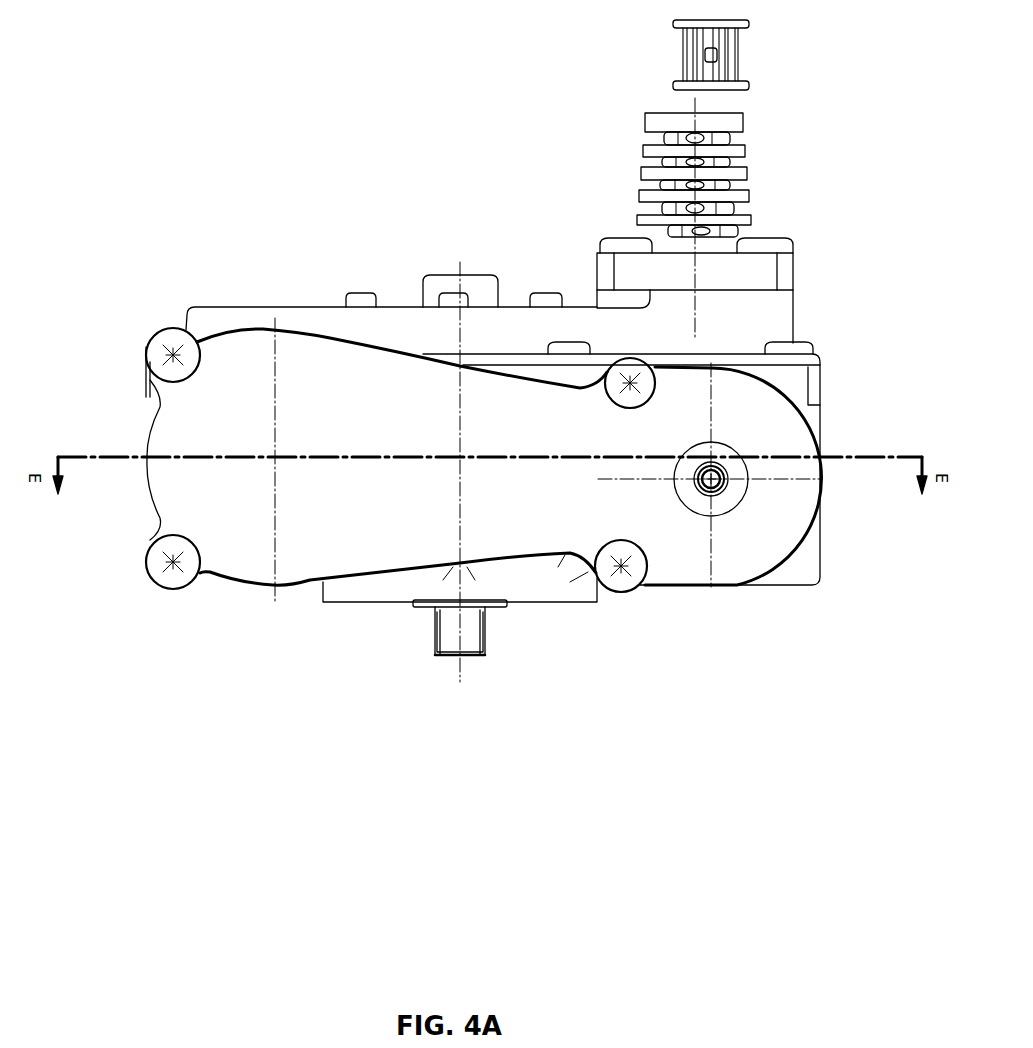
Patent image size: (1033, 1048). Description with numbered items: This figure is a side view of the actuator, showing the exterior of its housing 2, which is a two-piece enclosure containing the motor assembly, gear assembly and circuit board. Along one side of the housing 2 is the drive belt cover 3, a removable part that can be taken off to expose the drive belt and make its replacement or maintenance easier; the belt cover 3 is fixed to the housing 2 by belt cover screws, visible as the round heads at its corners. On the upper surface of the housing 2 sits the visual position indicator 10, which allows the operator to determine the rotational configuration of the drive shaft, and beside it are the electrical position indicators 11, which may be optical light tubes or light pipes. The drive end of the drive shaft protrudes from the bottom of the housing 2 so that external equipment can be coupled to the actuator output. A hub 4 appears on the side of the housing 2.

The housing 2 is at (826, 312).
The drive belt cover 3 is at (227, 553).
The output shaft hub 4 is at (730, 495).
The visual position indicator 10 is at (460, 275).
The electrical position indicators 11 is at (540, 293).